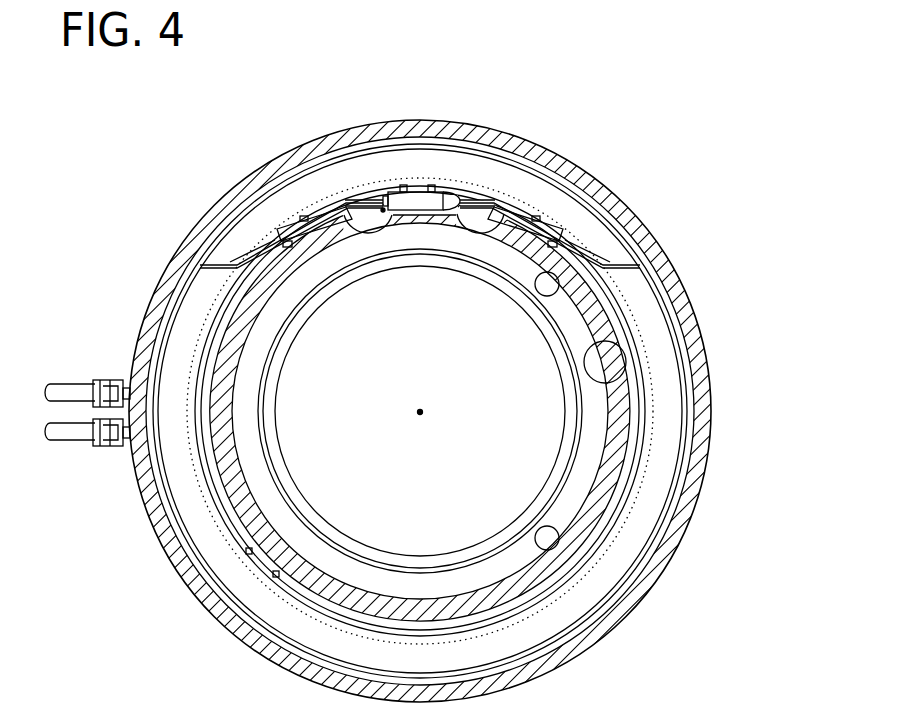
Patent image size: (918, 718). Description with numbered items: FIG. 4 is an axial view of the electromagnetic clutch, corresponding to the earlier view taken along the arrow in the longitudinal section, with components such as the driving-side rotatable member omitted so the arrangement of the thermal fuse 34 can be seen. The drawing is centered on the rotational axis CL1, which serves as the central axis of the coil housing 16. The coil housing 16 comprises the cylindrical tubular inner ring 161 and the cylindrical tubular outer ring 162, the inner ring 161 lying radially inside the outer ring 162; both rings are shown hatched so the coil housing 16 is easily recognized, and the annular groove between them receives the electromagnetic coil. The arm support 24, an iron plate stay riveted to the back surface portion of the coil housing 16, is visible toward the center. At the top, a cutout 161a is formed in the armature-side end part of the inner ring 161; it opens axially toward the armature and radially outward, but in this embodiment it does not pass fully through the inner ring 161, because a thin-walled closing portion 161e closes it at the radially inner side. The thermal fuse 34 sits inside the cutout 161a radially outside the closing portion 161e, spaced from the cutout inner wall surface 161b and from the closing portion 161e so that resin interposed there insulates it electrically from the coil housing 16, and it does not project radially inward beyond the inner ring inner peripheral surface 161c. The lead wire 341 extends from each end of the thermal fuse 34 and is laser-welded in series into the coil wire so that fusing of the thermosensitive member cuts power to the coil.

The coil housing 16 is at (664, 576).
The outer ring 162 is at (688, 286).
The inner ring 161 is at (613, 462).
The cutout 161a is at (340, 238).
The cutout inner wall surface 161b is at (338, 238).
The inner ring inner peripheral surface 161c is at (600, 360).
The closing portion 161e is at (408, 242).
The lead wire 341 is at (373, 196).
The thermal fuse 34 is at (410, 200).
The arm support 24 is at (323, 557).
The rotational axis CL1 is at (423, 410).